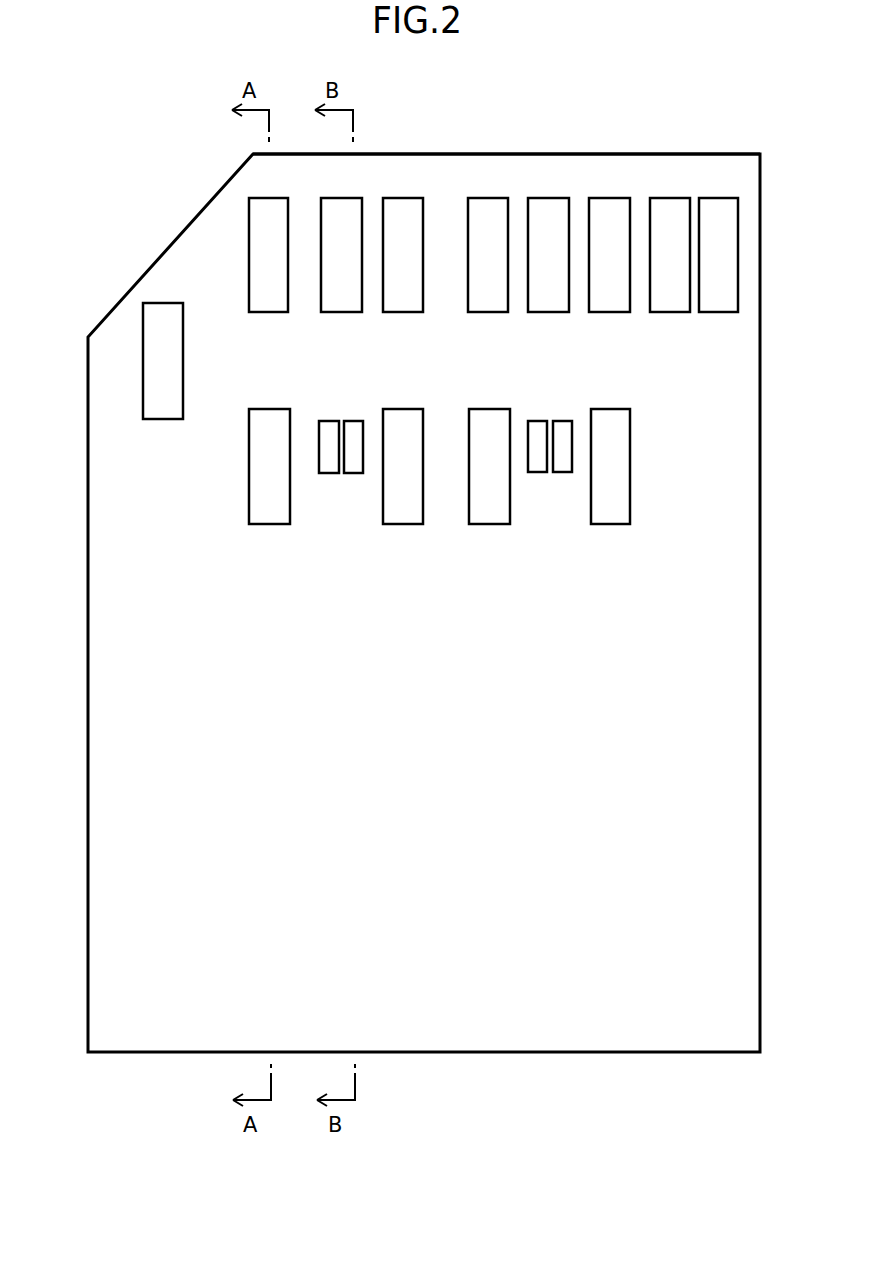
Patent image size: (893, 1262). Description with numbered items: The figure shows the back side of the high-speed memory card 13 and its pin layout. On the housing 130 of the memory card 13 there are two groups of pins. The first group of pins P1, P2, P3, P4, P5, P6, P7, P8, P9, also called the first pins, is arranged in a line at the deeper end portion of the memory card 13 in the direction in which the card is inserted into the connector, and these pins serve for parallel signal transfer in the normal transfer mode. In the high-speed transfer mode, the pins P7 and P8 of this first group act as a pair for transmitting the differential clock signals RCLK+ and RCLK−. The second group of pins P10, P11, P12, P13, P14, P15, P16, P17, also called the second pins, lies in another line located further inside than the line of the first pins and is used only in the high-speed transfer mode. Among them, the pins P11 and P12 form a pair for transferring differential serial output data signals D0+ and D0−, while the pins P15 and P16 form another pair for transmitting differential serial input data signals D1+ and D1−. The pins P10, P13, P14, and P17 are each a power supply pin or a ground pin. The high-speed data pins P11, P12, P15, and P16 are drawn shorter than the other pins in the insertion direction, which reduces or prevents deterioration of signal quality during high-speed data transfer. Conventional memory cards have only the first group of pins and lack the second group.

The memory card 13 is at (105, 192).
The housing 130 is at (517, 154).
The pin P1 is at (272, 197).
The pin P2 is at (343, 197).
The pin P3 is at (403, 197).
The pin P4 is at (487, 197).
The pin P5 is at (548, 197).
The pin P6 is at (608, 197).
The pin P7 is at (670, 197).
The pin P8 is at (718, 197).
The pin P9 is at (165, 420).
The pin P10 is at (273, 524).
The pin P11 is at (329, 421).
The pin P12 is at (352, 421).
The pin P13 is at (405, 524).
The pin P14 is at (492, 524).
The pin P15 is at (537, 421).
The pin P16 is at (562, 421).
The pin P17 is at (611, 524).